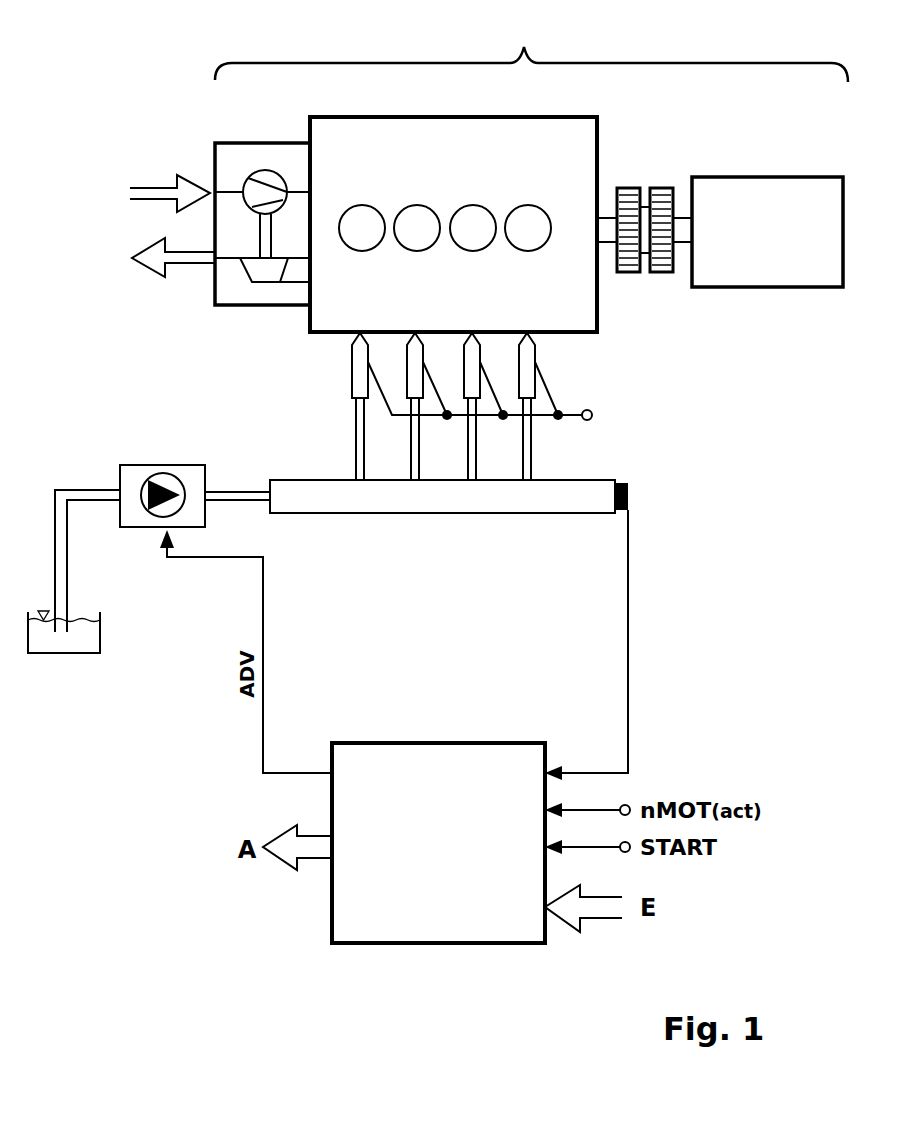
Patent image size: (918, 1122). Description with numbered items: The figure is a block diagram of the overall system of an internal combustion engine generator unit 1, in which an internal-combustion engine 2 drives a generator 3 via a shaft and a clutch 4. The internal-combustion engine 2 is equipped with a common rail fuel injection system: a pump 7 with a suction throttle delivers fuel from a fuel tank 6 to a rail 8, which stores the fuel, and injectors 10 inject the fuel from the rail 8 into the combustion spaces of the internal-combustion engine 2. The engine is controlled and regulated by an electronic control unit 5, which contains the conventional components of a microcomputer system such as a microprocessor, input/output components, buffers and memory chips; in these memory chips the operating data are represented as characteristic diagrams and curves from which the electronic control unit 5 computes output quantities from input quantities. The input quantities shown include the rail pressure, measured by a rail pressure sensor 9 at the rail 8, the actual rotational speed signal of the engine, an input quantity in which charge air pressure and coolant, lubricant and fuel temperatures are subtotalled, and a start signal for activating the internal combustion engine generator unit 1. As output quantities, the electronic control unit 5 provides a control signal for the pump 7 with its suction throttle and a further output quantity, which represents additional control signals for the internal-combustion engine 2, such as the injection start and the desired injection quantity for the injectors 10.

The internal combustion engine generator unit 1 is at (531, 50).
The internal-combustion engine 2 is at (555, 312).
The generator 3 is at (750, 244).
The clutch 4 is at (651, 174).
The electronic control unit 5 is at (425, 912).
The fuel tank 6 is at (90, 643).
The pump 7 is at (153, 465).
The rail 8 is at (407, 505).
The rail pressure sensor 9 is at (630, 497).
The injectors 10 is at (358, 365).